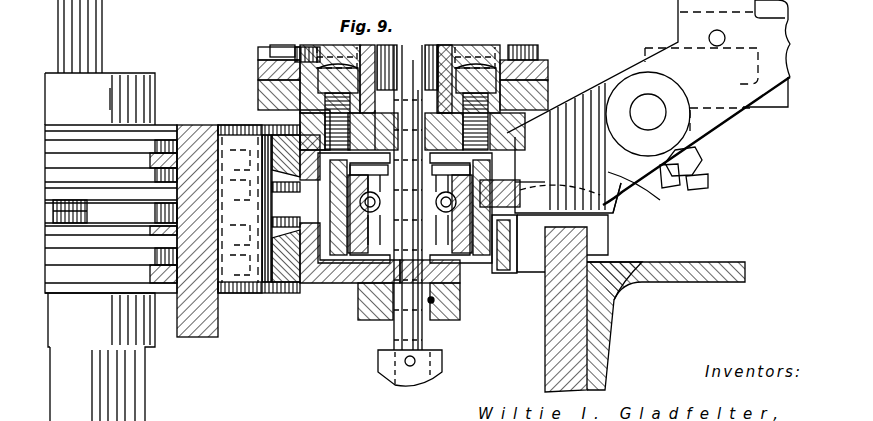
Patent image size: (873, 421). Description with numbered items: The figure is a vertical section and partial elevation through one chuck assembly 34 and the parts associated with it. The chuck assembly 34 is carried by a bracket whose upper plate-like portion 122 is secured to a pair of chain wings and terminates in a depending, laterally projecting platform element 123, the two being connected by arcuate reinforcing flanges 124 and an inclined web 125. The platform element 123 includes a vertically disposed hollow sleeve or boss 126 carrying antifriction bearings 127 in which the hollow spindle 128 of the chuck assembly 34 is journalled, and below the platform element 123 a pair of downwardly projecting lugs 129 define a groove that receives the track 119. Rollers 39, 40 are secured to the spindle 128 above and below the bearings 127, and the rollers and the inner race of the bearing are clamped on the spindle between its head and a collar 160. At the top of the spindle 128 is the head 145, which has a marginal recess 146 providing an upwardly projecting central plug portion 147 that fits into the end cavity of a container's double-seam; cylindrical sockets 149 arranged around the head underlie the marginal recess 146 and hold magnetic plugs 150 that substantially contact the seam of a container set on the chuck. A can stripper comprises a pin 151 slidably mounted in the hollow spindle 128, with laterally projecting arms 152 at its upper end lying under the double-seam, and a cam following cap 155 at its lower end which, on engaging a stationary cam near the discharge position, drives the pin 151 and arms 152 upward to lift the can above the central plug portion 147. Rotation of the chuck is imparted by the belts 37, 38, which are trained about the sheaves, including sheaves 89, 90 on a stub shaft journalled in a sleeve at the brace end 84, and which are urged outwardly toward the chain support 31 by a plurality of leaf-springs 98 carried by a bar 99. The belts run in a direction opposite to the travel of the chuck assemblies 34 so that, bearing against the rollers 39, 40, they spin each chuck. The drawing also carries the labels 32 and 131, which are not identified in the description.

The chain support 31 is at (712, 262).
The frame 32 is at (769, 9).
The chuck assembly 34 is at (258, 96).
The belt 37 is at (265, 125).
The belt 38 is at (282, 295).
The roller 39 is at (556, 200).
The roller 40 is at (325, 282).
The rearwardly projecting end of brace 84 is at (123, 370).
The sheave 89 is at (160, 124).
The sheave 90 is at (245, 293).
The leaf-spring 98 is at (178, 210).
The bar 99 is at (195, 325).
The track 119 is at (568, 346).
The upper plate-like portion 122 is at (770, 106).
The platform element 123 is at (625, 205).
The arcuate reinforcing flange 124 is at (560, 110).
The inclined web 125 is at (660, 187).
The hollow sleeve or boss 126 is at (335, 212).
The antifriction bearing 127 is at (367, 272).
The spindle 128 is at (393, 322).
The lug 129 is at (607, 240).
The disk 131 is at (645, 100).
The head 145 is at (553, 80).
The marginal recess 146 is at (272, 55).
The central plug portion 147 is at (282, 45).
The cylindrical socket 149 is at (296, 60).
The magnetic plug 150 is at (257, 75).
The pin 151 is at (415, 338).
The arm 152 is at (420, 45).
The cam following cap 155 is at (393, 378).
The collar 160 is at (440, 310).